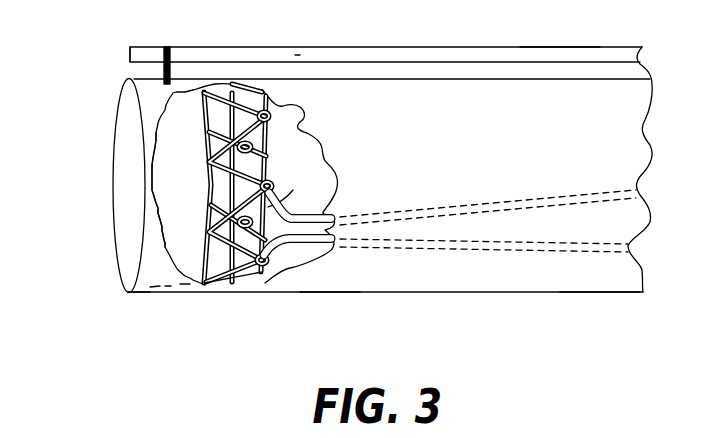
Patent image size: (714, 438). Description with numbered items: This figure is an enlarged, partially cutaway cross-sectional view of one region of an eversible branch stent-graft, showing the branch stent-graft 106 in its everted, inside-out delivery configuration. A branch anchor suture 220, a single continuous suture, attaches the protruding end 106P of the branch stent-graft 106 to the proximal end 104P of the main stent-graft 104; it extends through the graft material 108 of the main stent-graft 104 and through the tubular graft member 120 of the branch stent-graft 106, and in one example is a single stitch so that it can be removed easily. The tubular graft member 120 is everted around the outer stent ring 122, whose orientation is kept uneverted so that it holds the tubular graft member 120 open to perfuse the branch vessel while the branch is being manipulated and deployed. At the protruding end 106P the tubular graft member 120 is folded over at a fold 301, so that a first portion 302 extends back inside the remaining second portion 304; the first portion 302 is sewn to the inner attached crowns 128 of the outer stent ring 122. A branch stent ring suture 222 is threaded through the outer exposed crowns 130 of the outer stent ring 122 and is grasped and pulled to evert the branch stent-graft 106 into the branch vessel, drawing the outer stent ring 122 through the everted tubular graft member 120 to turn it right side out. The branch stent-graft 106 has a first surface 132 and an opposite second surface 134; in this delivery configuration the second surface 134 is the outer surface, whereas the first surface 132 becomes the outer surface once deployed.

The main stent-graft 104 is at (385, 49).
The proximal end of main stent-graft 104P is at (130, 53).
The branch stent-graft 106 is at (408, 268).
The protruding end of branch stent-graft 106P is at (127, 293).
The graft material 108 is at (295, 53).
The tubular graft member 120 is at (528, 95).
The outer stent ring 122 is at (218, 82).
The inner attached crowns 128 is at (203, 290).
The outer exposed crowns 130 is at (293, 190).
The first surface 132 is at (597, 290).
The second surface 134 is at (515, 293).
The branch anchor suture 220 is at (167, 46).
The branch stent ring suture 222 is at (323, 162).
The fold 301 is at (117, 97).
The first portion of tubular graft member 302 is at (167, 285).
The second portion of tubular graft member 304 is at (328, 282).